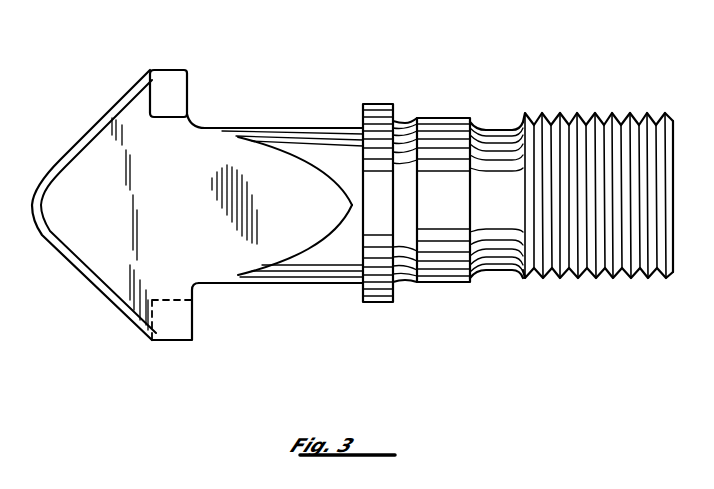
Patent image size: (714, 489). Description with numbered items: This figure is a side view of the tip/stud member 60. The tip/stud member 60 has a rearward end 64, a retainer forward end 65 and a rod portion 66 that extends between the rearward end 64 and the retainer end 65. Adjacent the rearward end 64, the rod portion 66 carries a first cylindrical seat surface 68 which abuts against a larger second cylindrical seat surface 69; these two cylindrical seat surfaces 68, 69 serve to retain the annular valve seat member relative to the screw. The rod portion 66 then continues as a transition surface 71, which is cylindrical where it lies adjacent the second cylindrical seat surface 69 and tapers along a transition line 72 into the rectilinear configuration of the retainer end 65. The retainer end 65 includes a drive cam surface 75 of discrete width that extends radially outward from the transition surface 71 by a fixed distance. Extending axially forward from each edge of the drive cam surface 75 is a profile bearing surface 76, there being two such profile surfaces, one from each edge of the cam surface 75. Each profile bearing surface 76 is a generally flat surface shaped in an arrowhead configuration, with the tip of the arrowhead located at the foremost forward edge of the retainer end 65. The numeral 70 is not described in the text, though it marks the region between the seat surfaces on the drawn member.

The tip/stud member 60 is at (606, 108).
The rearward end 64 is at (603, 280).
The retainer forward end 65 is at (172, 70).
The rod portion 66 is at (437, 118).
The first cylindrical seat surface 68 is at (446, 280).
The second cylindrical seat surface 69 is at (370, 104).
The groove 70 is at (405, 123).
The transition surface 71 is at (243, 128).
The transition line 72 is at (280, 284).
The drive cam surface 75 is at (195, 323).
The profile bearing surface 76 is at (110, 248).